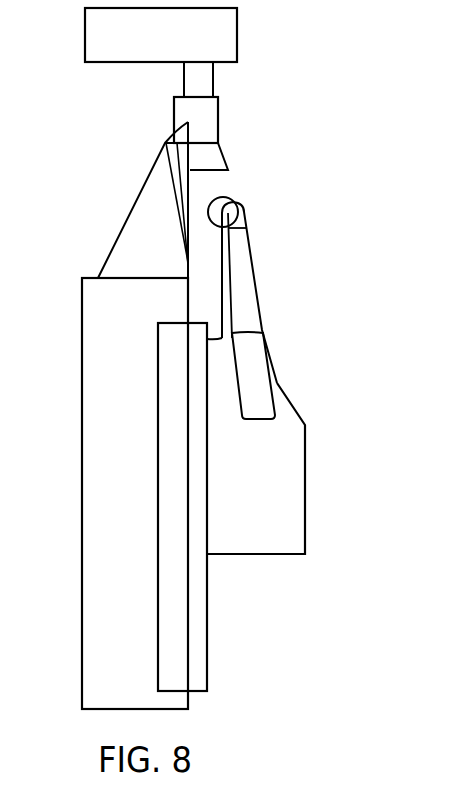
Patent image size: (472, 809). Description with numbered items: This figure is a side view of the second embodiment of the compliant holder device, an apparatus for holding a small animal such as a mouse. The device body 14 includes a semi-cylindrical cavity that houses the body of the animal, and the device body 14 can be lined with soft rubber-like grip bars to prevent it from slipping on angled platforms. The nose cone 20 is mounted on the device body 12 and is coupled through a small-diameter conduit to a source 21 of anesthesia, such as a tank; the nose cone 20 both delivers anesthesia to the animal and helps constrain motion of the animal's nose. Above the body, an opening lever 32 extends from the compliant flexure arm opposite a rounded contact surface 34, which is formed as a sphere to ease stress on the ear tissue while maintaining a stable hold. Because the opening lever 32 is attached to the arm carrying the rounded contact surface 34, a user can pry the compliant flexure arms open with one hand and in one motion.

The source 21 is at (170, 48).
The nose cone 20 is at (208, 125).
The device body 14 is at (112, 508).
The rounded contact surfaces 34 is at (222, 202).
The opening levers 32 is at (252, 377).
The device body 12 is at (287, 478).